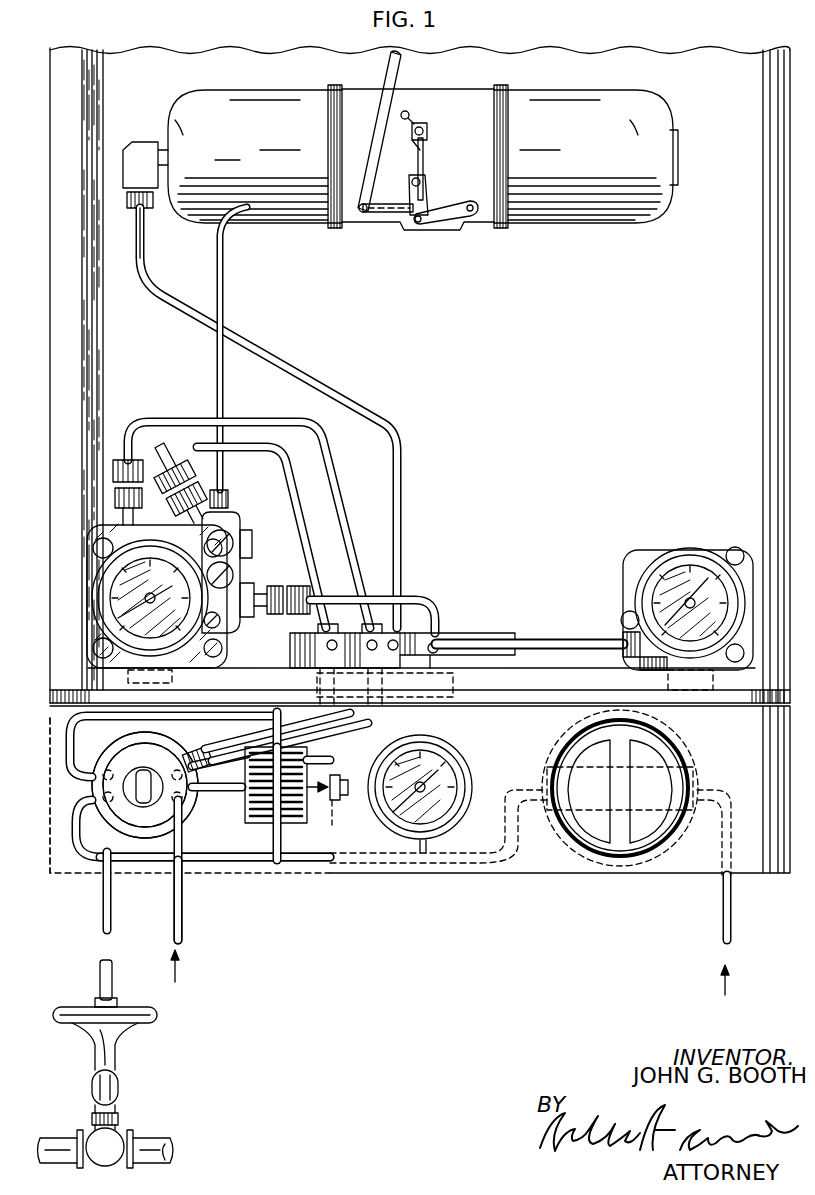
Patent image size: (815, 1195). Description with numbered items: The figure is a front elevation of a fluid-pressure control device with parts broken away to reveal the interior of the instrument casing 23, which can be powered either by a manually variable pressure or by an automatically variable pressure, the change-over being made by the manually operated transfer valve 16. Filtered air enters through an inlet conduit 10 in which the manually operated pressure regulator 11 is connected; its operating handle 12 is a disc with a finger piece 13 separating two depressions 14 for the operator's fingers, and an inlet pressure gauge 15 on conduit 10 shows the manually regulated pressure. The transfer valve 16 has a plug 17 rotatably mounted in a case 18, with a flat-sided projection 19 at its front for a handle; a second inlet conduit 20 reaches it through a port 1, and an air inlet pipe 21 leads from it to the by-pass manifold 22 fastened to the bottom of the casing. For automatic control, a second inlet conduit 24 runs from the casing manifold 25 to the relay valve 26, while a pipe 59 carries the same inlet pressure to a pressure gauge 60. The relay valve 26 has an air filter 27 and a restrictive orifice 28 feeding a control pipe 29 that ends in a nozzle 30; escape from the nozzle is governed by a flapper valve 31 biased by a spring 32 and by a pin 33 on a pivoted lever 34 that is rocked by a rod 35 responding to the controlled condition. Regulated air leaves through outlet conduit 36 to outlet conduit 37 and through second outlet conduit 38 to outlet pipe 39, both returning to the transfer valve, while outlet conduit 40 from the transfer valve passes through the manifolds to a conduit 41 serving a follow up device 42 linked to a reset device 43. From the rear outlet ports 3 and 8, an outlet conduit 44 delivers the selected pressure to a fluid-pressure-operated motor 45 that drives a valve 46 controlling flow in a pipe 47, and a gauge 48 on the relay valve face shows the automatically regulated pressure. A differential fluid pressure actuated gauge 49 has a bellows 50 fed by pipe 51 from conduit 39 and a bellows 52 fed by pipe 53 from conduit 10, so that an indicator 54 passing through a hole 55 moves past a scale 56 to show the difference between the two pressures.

The port 1 is at (182, 765).
The outlet port 3 is at (100, 762).
The outlet port 8 is at (86, 799).
The inlet conduit 10 is at (224, 860).
The manually operated pressure regulator 11 is at (700, 743).
The operating handle 12 is at (614, 732).
The finger piece 13 is at (631, 783).
The depressions 14 is at (592, 764).
The inlet pressure gauge 15 is at (444, 750).
The transfer valve 16 is at (194, 876).
The plug 17 is at (149, 790).
The case 18 is at (116, 748).
The flat-sided projection 19 is at (152, 767).
The inlet conduit 20 is at (172, 915).
The air inlet pipe 21 is at (240, 793).
The by-pass manifold 22 is at (455, 683).
The instrument casing 23 is at (104, 68).
The second inlet conduit 24 is at (413, 595).
The casing manifold 25 is at (453, 633).
The relay valve 26 is at (156, 380).
The air filter 27 is at (239, 582).
The restrictive orifice 28 is at (233, 528).
The control pipe 29 is at (224, 383).
The nozzle 30 is at (393, 216).
The flapper valve 31 is at (424, 163).
The spring 32 is at (420, 105).
The pin 33 is at (410, 178).
The lever 34 is at (441, 219).
The rod 35 is at (400, 66).
The outlet conduit 36 is at (245, 423).
The outlet conduit 37 is at (246, 762).
The second outlet conduit 38 is at (292, 488).
The outlet pipe 39 is at (60, 739).
The outlet conduit 40 is at (216, 734).
The conduit 41 is at (176, 272).
The follow up device 42 is at (260, 107).
The reset device 43 is at (543, 107).
The outlet conduit 44 is at (112, 887).
The fluid-pressure-operated motor 45 is at (80, 1004).
The valve 46 is at (92, 1138).
The pipe 47 is at (148, 1143).
The gauge 48 is at (94, 608).
The differential fluid pressure actuated gauge 49 is at (309, 876).
The bellows 50 is at (318, 760).
The pipe 51 is at (296, 730).
The bellows 52 is at (284, 806).
The pipe 53 is at (270, 835).
The indicator 54 is at (340, 782).
The hole 55 is at (332, 818).
The scale 56 is at (346, 794).
The pipe 59 is at (528, 636).
The pressure gauge 60 is at (668, 556).